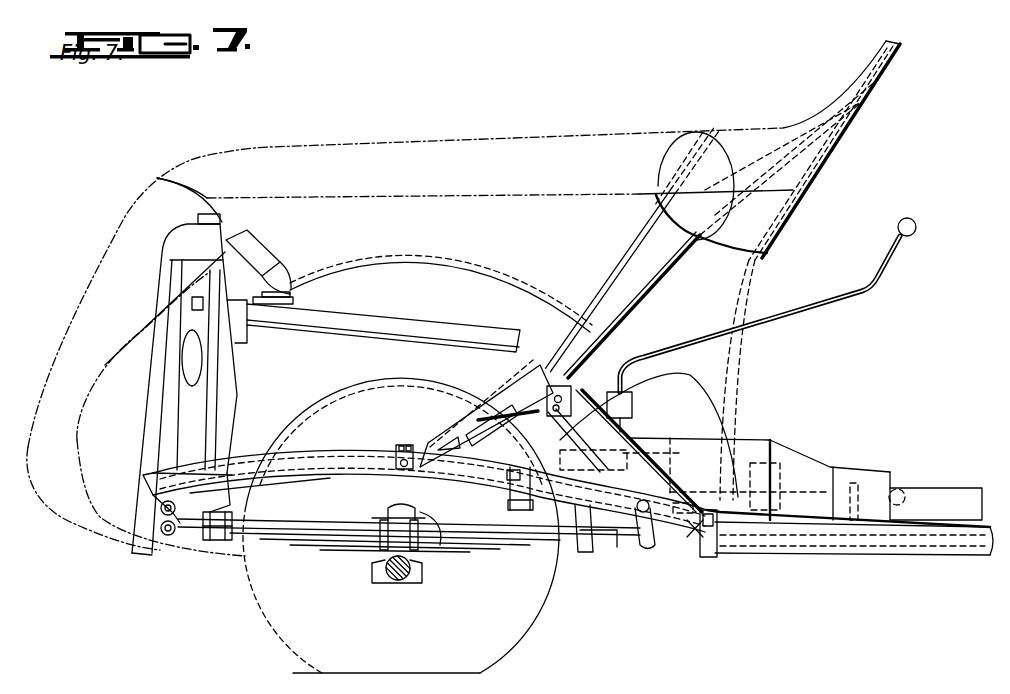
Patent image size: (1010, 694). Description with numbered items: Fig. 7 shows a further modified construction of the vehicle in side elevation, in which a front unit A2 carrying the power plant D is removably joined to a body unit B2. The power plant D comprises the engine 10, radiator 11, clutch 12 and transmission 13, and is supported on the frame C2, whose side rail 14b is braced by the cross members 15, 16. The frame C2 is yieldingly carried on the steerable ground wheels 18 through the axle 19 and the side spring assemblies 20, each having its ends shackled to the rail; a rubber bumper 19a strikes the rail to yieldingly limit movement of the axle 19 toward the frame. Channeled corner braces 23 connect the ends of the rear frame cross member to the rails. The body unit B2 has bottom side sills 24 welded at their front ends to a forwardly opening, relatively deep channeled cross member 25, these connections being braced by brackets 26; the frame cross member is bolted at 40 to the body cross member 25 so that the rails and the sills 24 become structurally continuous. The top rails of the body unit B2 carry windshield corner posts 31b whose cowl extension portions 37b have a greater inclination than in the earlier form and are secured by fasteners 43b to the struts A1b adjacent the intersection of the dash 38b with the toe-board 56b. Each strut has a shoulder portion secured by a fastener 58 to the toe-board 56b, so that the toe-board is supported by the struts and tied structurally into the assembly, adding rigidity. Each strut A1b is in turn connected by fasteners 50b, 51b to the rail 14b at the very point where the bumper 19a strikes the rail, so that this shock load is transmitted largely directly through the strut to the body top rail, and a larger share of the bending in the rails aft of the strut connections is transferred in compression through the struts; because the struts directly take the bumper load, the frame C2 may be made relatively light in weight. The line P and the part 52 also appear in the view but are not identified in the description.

The front unit A2 is at (347, 203).
The body unit B2 is at (780, 127).
The windshield corner posts 31b is at (877, 70).
The pillar line P is at (737, 358).
The cowl extension portions 37b is at (666, 283).
The dash 38b is at (635, 250).
The fasteners 43b is at (607, 333).
The fastener 58 is at (583, 378).
The toe-board 56b is at (603, 433).
The transmission 13 is at (667, 437).
The channeled corner braces 23 is at (603, 483).
The link 52 is at (553, 430).
The strut A1b is at (535, 360).
The fasteners 50b is at (410, 445).
The rail 14b is at (337, 457).
The fasteners 51b is at (393, 480).
The frame C2 is at (277, 460).
The cross member 15 is at (228, 440).
The brackets 26 is at (770, 525).
The bottom side sills 24 is at (883, 543).
The channeled cross member 25 is at (713, 547).
The bolts 40 is at (707, 527).
The clutch 12 is at (580, 552).
The cross member 16 is at (505, 500).
The side spring assemblies 20 is at (320, 547).
The rubber bumper 19a is at (437, 527).
The axle 19 is at (390, 580).
The steerable ground wheels 18 is at (507, 627).
The power plant D is at (383, 325).
The engine 10 is at (307, 333).
The radiator 11 is at (157, 297).